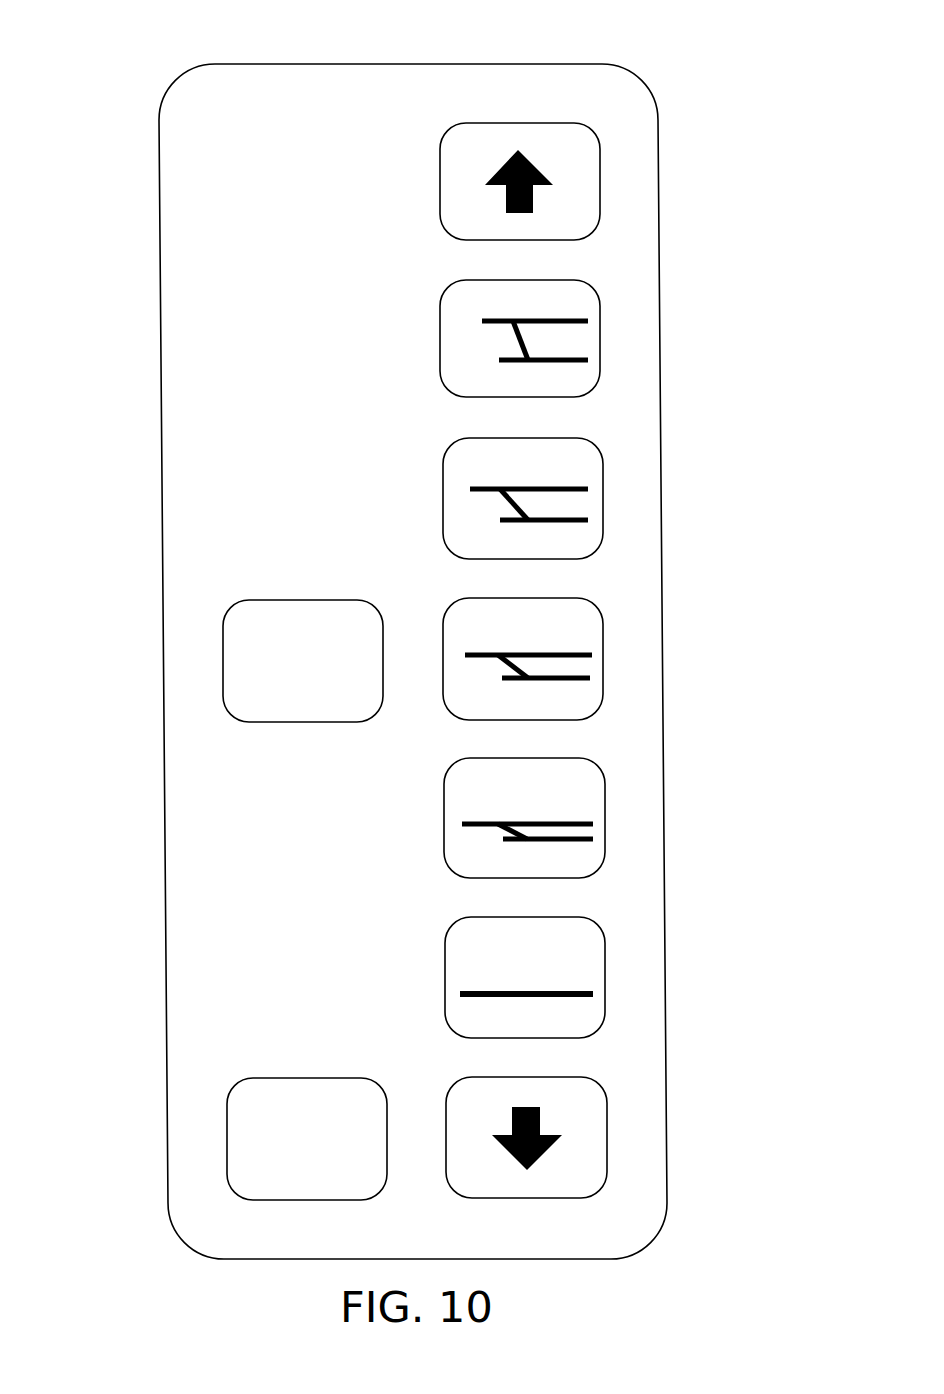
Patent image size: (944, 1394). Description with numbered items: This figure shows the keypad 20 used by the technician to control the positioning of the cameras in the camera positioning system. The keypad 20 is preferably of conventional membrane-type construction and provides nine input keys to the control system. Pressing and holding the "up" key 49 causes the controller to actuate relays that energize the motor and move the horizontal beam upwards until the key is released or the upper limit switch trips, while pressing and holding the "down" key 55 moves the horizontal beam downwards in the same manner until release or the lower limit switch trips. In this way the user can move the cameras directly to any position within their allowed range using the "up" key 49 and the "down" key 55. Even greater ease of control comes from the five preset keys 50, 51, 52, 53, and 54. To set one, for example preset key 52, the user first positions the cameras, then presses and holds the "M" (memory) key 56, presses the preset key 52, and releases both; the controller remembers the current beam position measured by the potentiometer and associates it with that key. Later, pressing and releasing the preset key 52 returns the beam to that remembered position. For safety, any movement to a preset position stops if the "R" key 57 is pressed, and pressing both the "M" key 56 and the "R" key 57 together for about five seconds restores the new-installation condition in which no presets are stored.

The keypad 20 is at (247, 87).
The "up" key 49 is at (573, 181).
The preset key 50 is at (575, 338).
The preset key 51 is at (577, 497).
The preset key 52 is at (590, 652).
The preset key 53 is at (578, 817).
The preset key 54 is at (578, 977).
The "down" key 55 is at (580, 1139).
The "M" (memory) key 56 is at (242, 660).
The "R" key 57 is at (247, 1140).